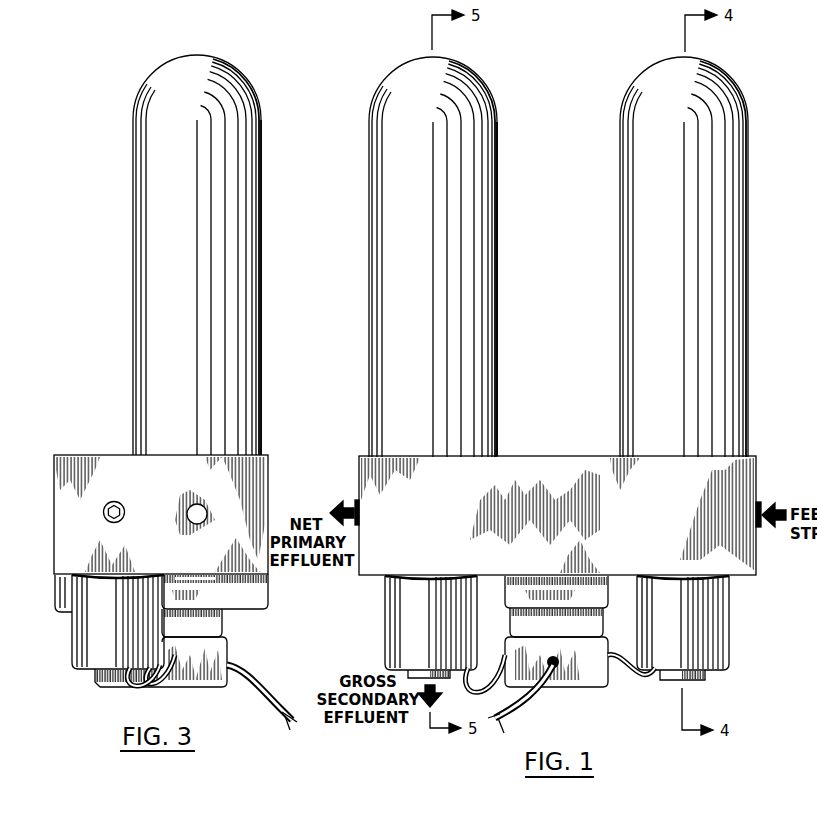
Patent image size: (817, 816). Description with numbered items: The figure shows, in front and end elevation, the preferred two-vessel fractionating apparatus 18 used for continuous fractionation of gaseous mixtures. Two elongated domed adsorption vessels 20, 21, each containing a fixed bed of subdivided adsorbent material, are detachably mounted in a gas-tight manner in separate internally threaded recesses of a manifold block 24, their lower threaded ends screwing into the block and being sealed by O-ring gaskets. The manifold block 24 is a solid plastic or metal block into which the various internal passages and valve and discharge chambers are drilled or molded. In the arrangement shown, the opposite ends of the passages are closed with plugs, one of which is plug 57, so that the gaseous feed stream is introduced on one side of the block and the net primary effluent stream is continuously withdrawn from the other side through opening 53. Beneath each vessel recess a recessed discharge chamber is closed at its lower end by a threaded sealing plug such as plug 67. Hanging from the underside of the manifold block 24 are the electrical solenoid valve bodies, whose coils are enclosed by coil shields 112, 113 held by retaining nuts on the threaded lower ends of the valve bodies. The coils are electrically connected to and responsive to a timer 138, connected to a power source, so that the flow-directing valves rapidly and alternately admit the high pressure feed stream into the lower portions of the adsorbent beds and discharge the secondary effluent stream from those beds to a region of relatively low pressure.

In FIG. 3, the two-vessel fractionating apparatus 18 is at (122, 81).
In FIG. 1, the two-vessel fractionating apparatus 18 is at (508, 95).
In FIG. 1, the elongated domed adsorption vessel 20 is at (620, 172).
In FIG. 3, the elongated domed adsorption vessel 21 is at (262, 173).
In FIG. 1, the elongated domed adsorption vessel 21 is at (497, 173).
In FIG. 3, the manifold block 24 is at (108, 455).
In FIG. 1, the manifold block 24 is at (605, 456).
In FIG. 3, the opening 53 is at (204, 509).
In FIG. 3, the plug 57 is at (122, 505).
In FIG. 3, the threaded sealing plug 67 is at (212, 583).
In FIG. 1, the threaded sealing plug 67 is at (556, 606).
In FIG. 1, the coil shield 112 is at (731, 642).
In FIG. 3, the coil shield 113 is at (68, 618).
In FIG. 1, the coil shield 113 is at (386, 620).
In FIG. 3, the timer 138 is at (233, 650).
In FIG. 1, the timer 138 is at (570, 689).